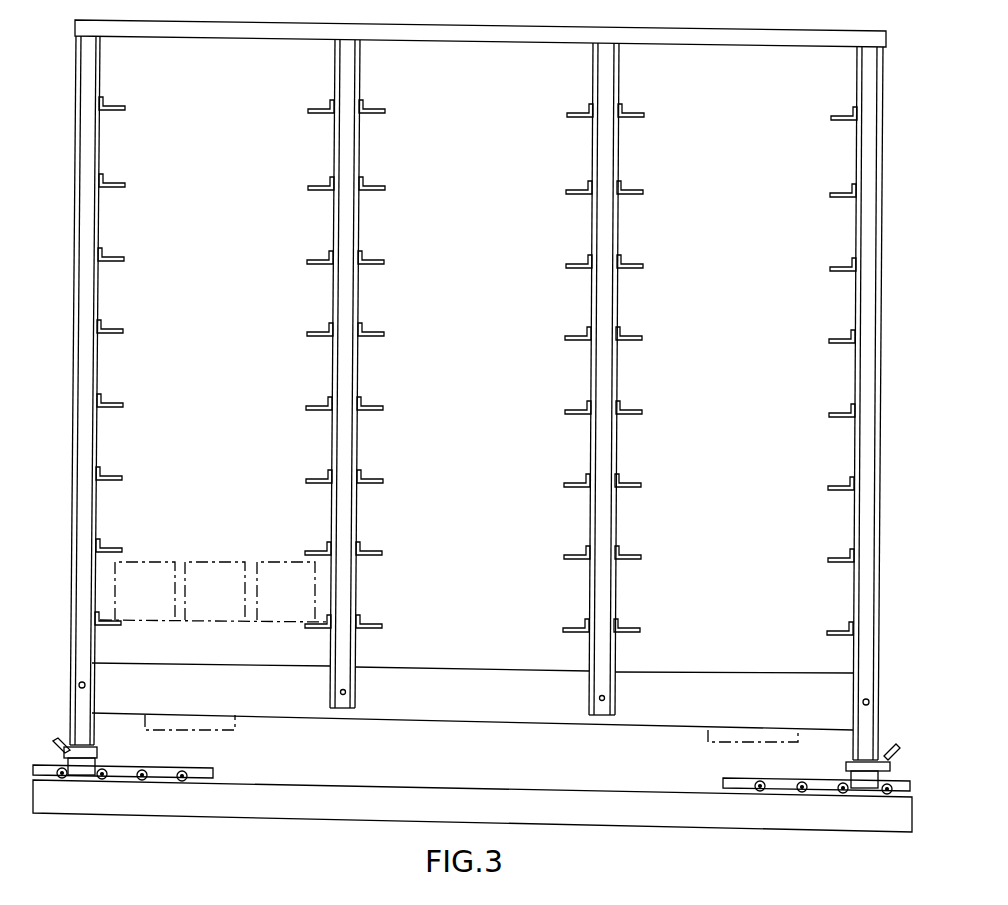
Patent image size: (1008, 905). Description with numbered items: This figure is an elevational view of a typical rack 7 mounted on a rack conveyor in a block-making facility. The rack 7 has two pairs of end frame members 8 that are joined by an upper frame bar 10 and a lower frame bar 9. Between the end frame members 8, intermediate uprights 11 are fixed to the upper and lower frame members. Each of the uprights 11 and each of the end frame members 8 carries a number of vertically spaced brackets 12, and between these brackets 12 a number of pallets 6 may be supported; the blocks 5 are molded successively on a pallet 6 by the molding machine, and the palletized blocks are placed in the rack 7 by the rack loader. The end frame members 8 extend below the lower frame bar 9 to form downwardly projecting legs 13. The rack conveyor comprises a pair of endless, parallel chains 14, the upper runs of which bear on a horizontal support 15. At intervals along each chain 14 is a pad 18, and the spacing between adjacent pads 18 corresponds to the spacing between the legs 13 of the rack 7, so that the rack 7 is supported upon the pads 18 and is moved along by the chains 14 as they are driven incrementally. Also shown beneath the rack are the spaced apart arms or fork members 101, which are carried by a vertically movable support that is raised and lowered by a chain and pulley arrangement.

The blocks 5 is at (267, 563).
The pallet 6 is at (230, 623).
The rack 7 is at (60, 328).
The end frame members 8 is at (74, 432).
The lower frame bar 9 is at (437, 716).
The upper frame bar 10 is at (524, 43).
The intermediate uprights 11 is at (350, 594).
The brackets 12 is at (381, 416).
The legs 13 is at (72, 722).
The chains 14 is at (160, 767).
The horizontal support 15 is at (487, 800).
The pad 18 is at (890, 752).
The fork members 101 is at (230, 733).